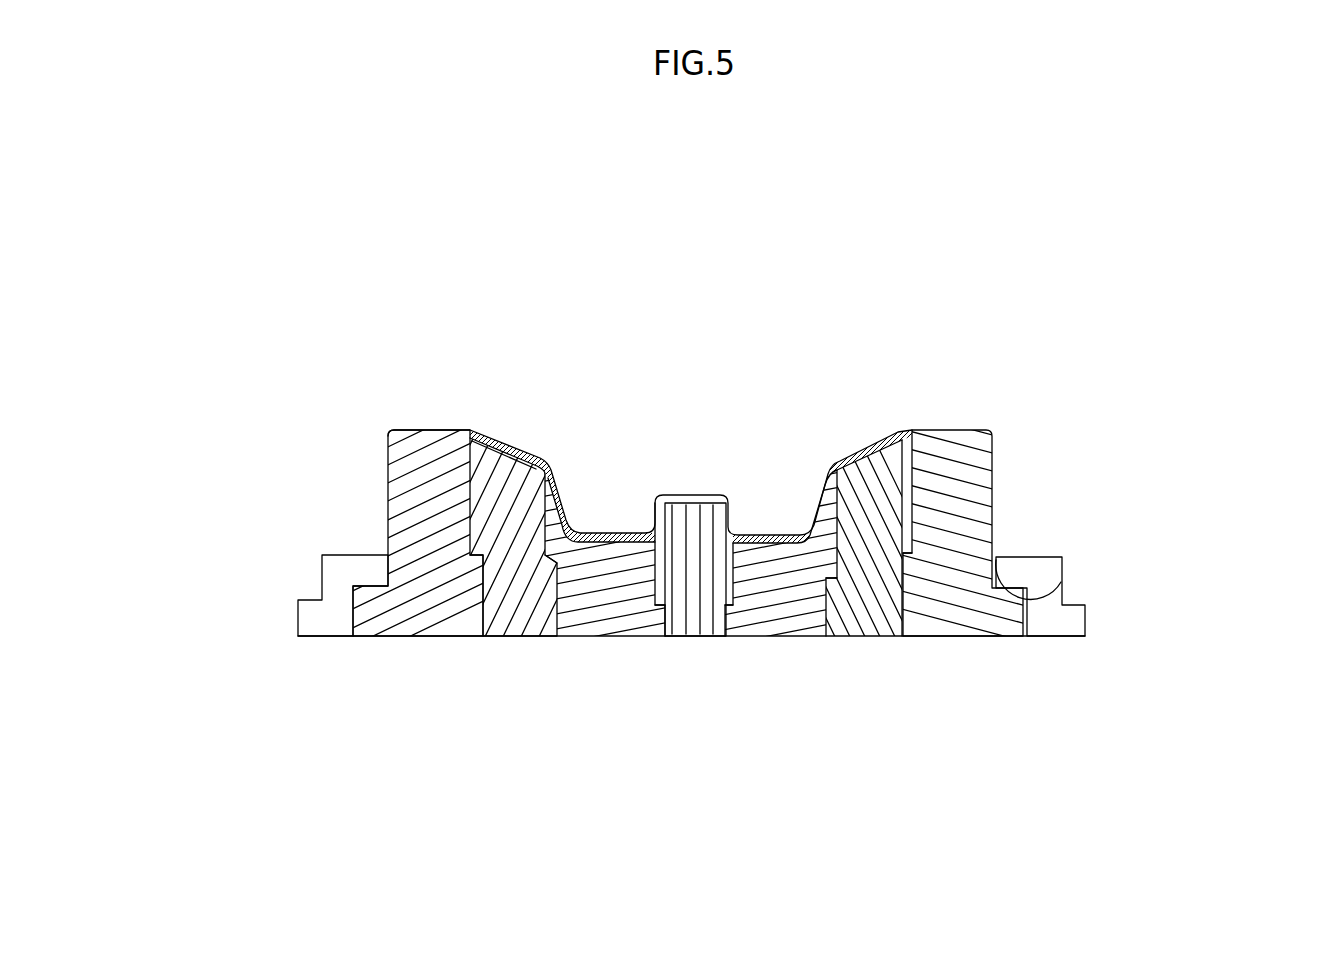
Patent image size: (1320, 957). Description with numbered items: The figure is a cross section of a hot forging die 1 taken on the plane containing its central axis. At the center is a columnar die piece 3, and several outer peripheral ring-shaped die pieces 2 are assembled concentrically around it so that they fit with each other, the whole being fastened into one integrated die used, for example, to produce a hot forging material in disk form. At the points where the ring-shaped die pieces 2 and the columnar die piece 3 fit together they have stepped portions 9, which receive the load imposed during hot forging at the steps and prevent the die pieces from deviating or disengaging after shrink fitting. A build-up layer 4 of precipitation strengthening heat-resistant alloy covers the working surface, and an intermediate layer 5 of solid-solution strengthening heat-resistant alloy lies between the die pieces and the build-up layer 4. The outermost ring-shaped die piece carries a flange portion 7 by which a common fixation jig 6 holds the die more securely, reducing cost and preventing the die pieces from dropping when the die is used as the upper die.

The hot forging die 1 is at (700, 456).
The outer peripheral ring-shaped die piece 2 is at (793, 593).
The columnar die piece 3 is at (678, 622).
The build-up layer 4 is at (548, 453).
The intermediate layer 5 is at (512, 446).
The fixation jig 6 is at (343, 588).
The flange portion 7 is at (1060, 556).
The stepped portion 9 is at (905, 612).